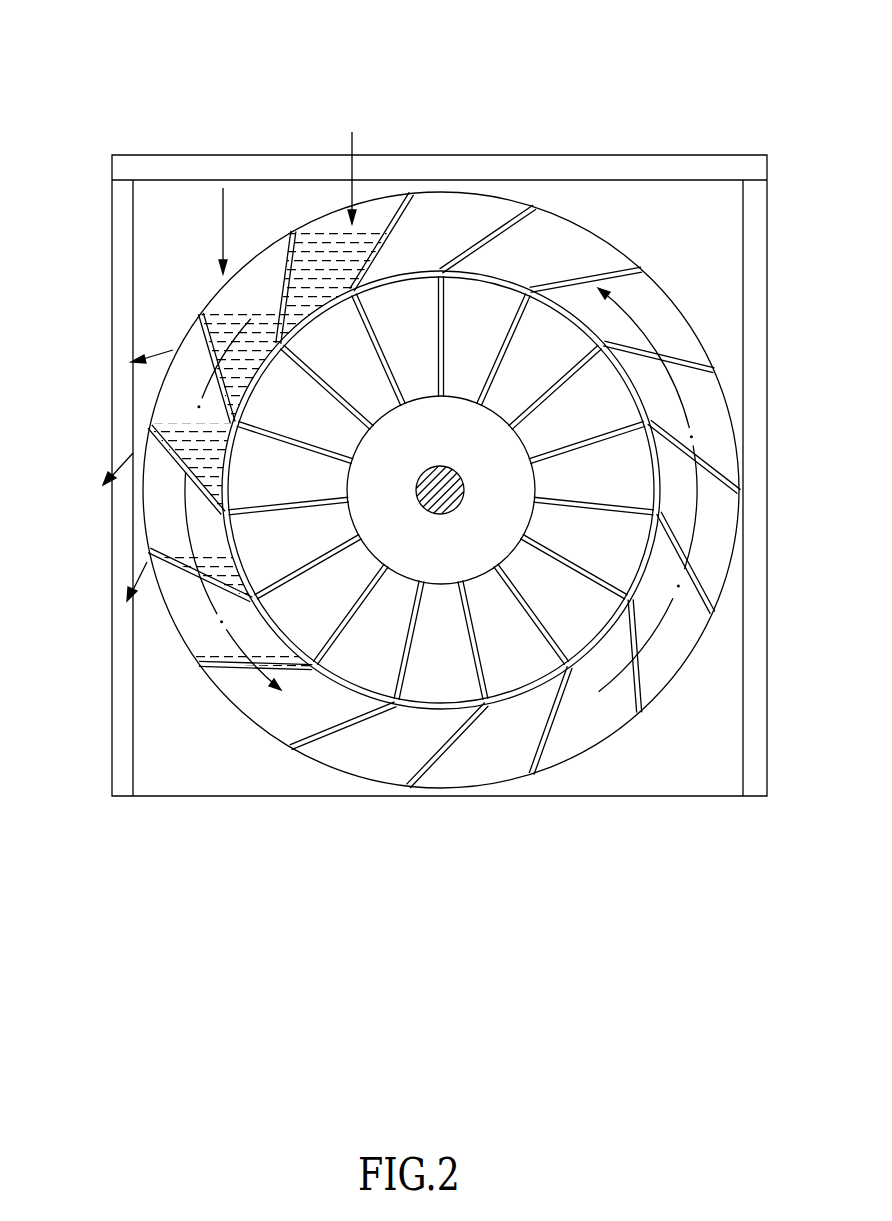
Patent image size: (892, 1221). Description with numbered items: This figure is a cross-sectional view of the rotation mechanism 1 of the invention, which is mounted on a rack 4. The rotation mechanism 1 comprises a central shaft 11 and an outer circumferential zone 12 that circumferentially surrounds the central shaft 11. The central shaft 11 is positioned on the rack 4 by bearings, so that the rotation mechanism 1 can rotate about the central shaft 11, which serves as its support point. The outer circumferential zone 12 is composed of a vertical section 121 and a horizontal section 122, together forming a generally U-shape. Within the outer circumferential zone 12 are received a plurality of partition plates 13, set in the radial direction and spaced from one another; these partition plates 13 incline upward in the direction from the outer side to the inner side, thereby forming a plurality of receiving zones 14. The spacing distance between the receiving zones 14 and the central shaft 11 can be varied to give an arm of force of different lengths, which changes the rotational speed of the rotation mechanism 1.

The rotation mechanism 1 is at (604, 228).
The rack 4 is at (693, 155).
The central shaft 11 is at (453, 500).
The outer circumferential zone 12 is at (268, 232).
The vertical section 121 is at (157, 403).
The horizontal section 122 is at (326, 290).
The partition plates 13 is at (253, 313).
The receiving zones 14 is at (182, 375).